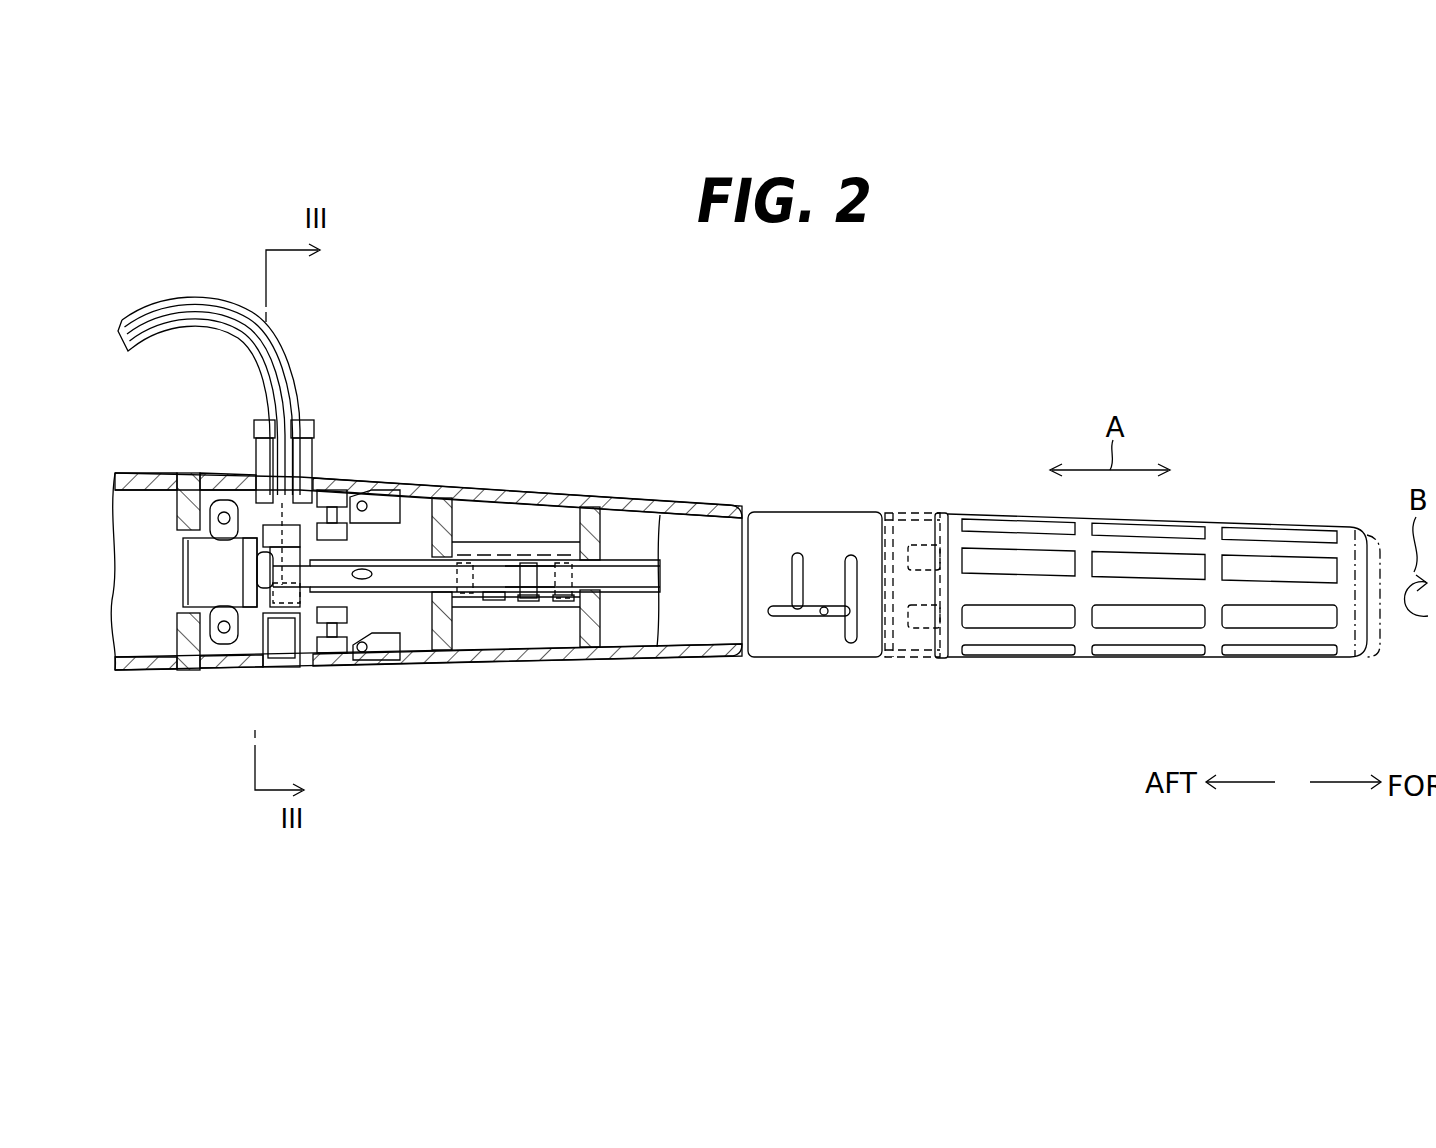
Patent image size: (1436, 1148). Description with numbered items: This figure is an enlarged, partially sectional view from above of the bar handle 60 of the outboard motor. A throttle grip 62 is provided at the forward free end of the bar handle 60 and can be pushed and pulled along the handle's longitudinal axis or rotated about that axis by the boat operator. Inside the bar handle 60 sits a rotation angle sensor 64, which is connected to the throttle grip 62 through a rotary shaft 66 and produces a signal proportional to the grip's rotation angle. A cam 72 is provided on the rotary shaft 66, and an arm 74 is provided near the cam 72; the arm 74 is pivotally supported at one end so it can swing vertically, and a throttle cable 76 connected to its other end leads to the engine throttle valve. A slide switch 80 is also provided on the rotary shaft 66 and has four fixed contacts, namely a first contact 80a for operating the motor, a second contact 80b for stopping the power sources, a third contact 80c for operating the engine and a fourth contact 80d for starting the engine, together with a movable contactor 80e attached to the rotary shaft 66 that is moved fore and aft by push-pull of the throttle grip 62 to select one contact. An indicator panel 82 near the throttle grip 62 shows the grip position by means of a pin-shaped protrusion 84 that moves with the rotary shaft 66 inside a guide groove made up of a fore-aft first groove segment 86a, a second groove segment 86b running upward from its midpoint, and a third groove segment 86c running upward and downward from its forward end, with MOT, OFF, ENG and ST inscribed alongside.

The bar handle 60 is at (684, 430).
The throttle grip 62 is at (1080, 640).
The rotation angle sensor 64 is at (197, 592).
The rotary shaft 66 is at (412, 563).
The cam 72 is at (293, 523).
The arm 74 is at (290, 648).
The throttle cable 76 is at (274, 370).
The slide switch 80 is at (483, 540).
The first contact 80a is at (568, 603).
The second contact 80b is at (530, 603).
The third contact 80c is at (502, 603).
The fourth contact 80d is at (470, 607).
The movable contactor 80e is at (528, 578).
The indicator panel 82 is at (814, 507).
The protrusion 84 is at (826, 620).
The first groove segment 86a is at (786, 620).
The second groove segment 86b is at (790, 560).
The third groove segment 86c is at (846, 557).